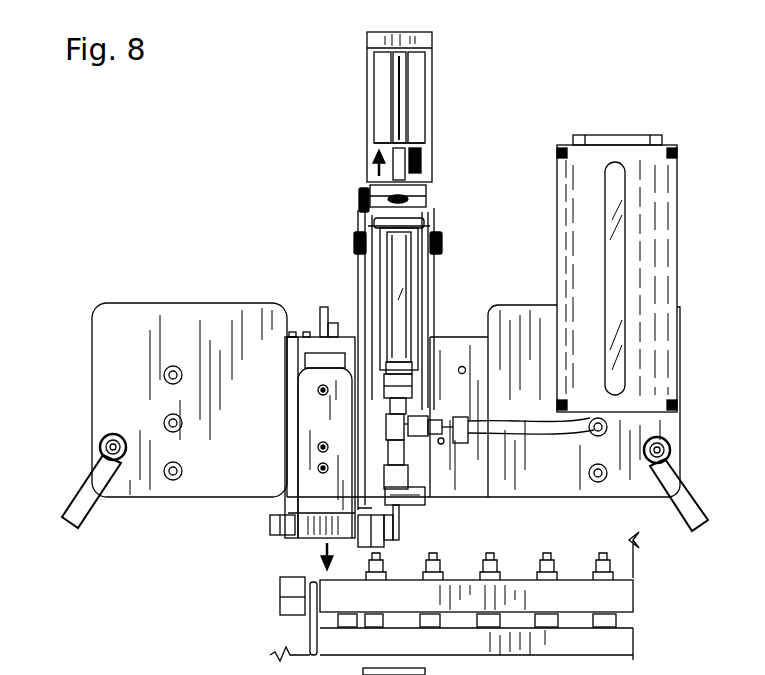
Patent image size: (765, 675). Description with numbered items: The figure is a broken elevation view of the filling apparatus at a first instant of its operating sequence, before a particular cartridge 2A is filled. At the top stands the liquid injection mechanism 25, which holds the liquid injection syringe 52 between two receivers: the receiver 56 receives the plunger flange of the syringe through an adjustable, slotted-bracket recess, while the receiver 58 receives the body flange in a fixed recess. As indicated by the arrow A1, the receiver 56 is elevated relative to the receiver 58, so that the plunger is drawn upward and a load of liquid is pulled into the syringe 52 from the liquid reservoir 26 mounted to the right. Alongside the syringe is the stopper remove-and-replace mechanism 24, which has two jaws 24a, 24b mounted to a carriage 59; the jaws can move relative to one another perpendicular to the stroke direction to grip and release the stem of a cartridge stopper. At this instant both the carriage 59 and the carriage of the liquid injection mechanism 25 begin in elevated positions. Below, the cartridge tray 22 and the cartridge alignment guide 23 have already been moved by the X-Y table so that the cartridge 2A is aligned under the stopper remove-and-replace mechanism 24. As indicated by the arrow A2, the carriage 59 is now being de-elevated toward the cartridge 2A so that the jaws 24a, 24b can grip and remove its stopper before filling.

The liquid injection mechanism 25 is at (448, 120).
The liquid reservoir 26 is at (618, 133).
The arrow A1 is at (372, 172).
The receiver 56 is at (340, 198).
The receiver 58 is at (460, 250).
The liquid injection syringe 52 is at (412, 282).
The stopper remove-and-replace mechanism 24 is at (283, 430).
The carriage 59 is at (345, 501).
The jaw 24a is at (392, 545).
The jaw 24b is at (365, 548).
The arrow A2 is at (322, 552).
The cartridge alignment guide 23 is at (620, 600).
The cartridge tray 22 is at (586, 651).
The cartridge 2A is at (385, 570).